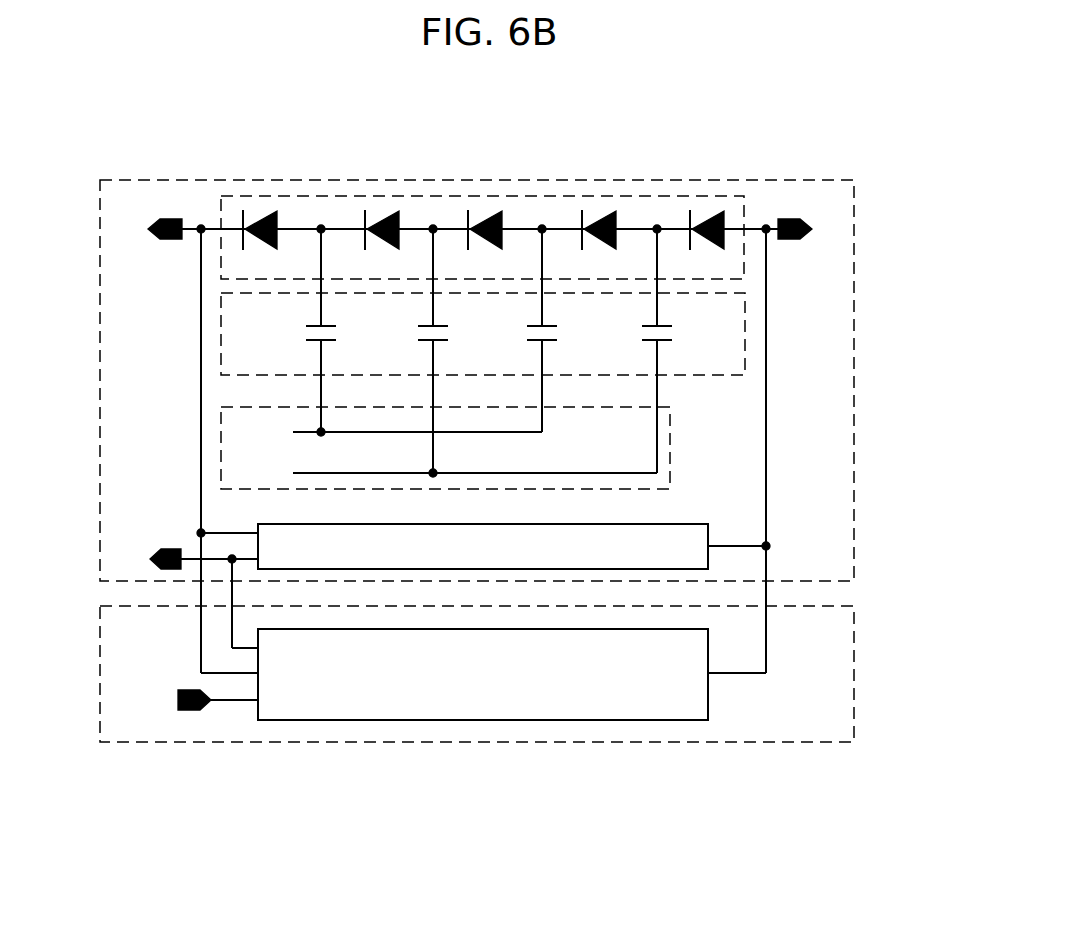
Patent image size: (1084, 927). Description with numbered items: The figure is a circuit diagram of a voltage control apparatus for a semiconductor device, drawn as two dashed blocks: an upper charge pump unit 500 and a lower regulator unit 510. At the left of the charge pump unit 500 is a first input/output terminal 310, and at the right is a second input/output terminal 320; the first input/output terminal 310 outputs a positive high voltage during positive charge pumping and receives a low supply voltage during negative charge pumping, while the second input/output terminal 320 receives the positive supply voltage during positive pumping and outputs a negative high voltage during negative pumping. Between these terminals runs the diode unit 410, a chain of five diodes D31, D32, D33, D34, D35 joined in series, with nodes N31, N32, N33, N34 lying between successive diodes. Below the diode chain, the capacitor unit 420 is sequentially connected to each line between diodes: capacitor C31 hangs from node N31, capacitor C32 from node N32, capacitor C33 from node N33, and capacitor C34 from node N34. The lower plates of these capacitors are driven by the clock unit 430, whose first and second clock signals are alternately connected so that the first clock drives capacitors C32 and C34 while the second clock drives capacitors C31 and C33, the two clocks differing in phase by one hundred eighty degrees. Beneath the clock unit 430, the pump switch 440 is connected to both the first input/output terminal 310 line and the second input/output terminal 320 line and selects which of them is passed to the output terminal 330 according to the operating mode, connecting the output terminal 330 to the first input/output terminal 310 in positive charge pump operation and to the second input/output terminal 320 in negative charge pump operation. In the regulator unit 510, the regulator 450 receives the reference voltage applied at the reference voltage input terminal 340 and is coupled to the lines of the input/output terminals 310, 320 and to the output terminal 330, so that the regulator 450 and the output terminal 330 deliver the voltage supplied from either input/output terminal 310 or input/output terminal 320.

The input/output terminal VPP 310 is at (170, 219).
The input/output terminal VEE 320 is at (787, 219).
The output terminal VOUT 330 is at (170, 549).
The reference voltage input terminal VREF 340 is at (182, 690).
The diode unit 410 is at (611, 196).
The capacitor unit 420 is at (221, 332).
The clock unit 430 is at (670, 447).
The pump switch 440 is at (681, 524).
The regulator 450 is at (708, 698).
The charge pump unit 500 is at (476, 180).
The regulator unit 510 is at (477, 743).
The diode D31 is at (260, 244).
The diode D32 is at (382, 244).
The diode D33 is at (485, 244).
The diode D34 is at (599, 244).
The diode D35 is at (707, 244).
The node N31 is at (319, 217).
The node N32 is at (436, 217).
The node N33 is at (545, 217).
The node N34 is at (659, 217).
The capacitor C31 is at (305, 330).
The capacitor C32 is at (414, 351).
The capacitor C33 is at (523, 330).
The capacitor C34 is at (638, 351).